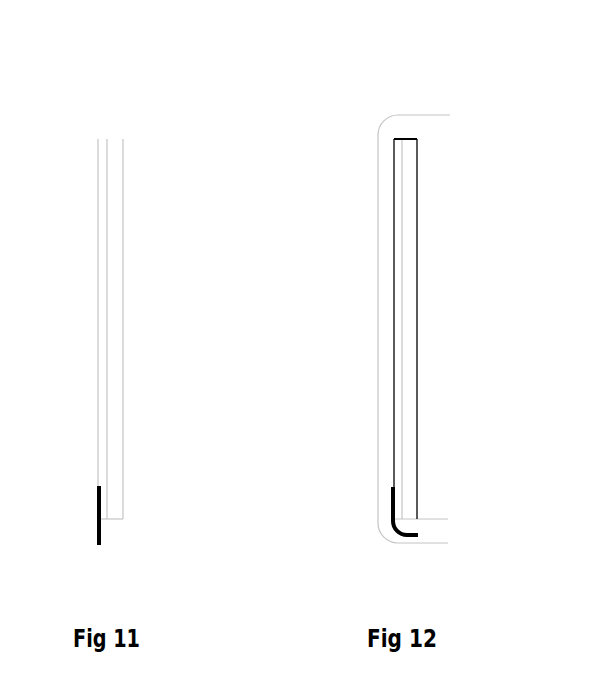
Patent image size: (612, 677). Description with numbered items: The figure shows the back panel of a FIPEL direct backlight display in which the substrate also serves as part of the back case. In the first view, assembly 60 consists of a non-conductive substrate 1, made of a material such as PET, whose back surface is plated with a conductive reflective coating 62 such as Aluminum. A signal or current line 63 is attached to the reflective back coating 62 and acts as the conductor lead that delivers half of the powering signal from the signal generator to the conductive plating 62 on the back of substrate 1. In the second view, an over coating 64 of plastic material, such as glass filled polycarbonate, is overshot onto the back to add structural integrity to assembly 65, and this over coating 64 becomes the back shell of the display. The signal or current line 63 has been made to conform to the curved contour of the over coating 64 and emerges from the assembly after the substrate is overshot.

In FIG. 11, the substrate 1 is at (117, 122).
In FIG. 12, the substrate 1 is at (430, 217).
In FIG. 11, the assembly 60 is at (107, 46).
In FIG. 11, the conductive reflective coating 62 is at (86, 200).
In FIG. 12, the conductive reflective coating 62 is at (381, 203).
In FIG. 11, the signal or current line 63 is at (85, 520).
In FIG. 12, the signal or current line 63 is at (380, 503).
In FIG. 12, the over coating 64 is at (366, 328).
In FIG. 12, the assembly 65 is at (417, 31).